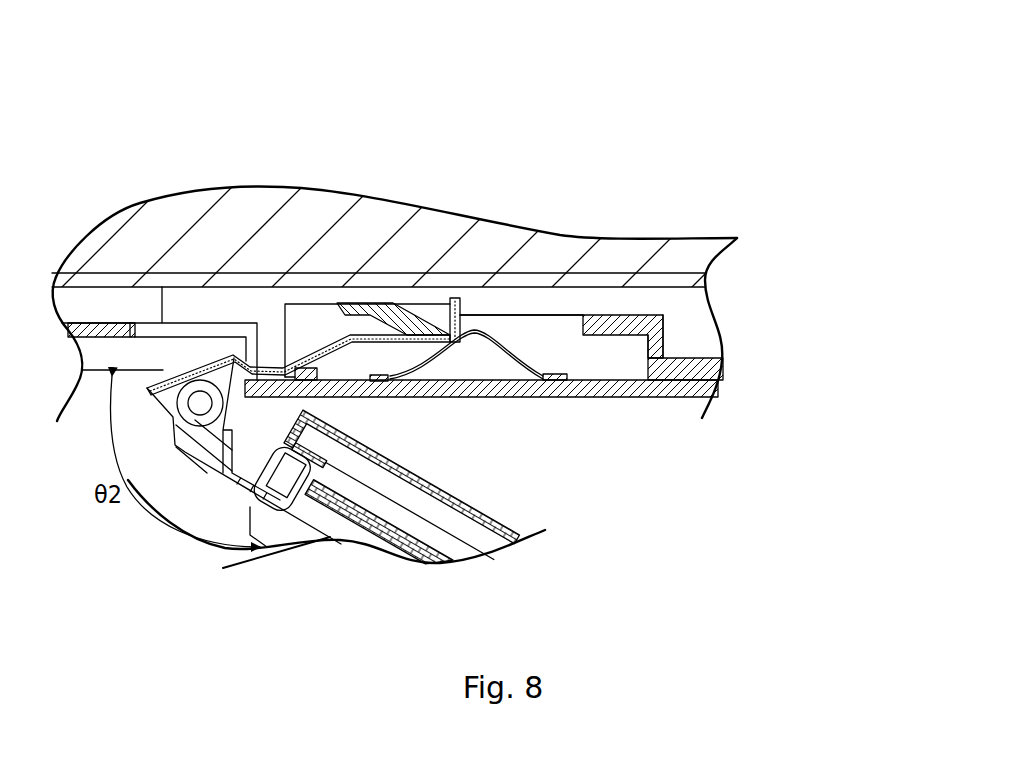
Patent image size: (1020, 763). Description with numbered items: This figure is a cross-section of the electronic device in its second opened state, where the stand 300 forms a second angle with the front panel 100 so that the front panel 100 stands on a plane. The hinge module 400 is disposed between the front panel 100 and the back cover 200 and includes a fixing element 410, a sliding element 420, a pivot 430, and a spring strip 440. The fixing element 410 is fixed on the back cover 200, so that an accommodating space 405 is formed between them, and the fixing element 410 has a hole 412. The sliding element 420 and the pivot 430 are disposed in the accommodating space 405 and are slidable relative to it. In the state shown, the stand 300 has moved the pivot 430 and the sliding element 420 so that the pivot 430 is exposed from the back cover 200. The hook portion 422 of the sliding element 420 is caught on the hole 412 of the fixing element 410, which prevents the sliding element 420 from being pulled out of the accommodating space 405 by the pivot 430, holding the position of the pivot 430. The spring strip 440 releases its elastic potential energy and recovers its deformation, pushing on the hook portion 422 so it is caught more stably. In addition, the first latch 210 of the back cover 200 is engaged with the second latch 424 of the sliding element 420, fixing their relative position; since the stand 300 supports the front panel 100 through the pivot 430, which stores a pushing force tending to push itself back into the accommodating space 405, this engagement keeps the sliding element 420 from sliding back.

The front panel 100 is at (705, 260).
The back cover 200 is at (720, 396).
The first latch 210 is at (300, 375).
The stand 300 is at (370, 518).
The hinge module 400 is at (667, 57).
The accommodating space 405 is at (639, 348).
The fixing element 410 is at (603, 320).
The hole 412 is at (547, 324).
The sliding element 420 is at (345, 342).
The hook portion 422 is at (450, 327).
The second latch 424 is at (273, 366).
The pivot 430 is at (200, 403).
The spring strip 440 is at (470, 333).